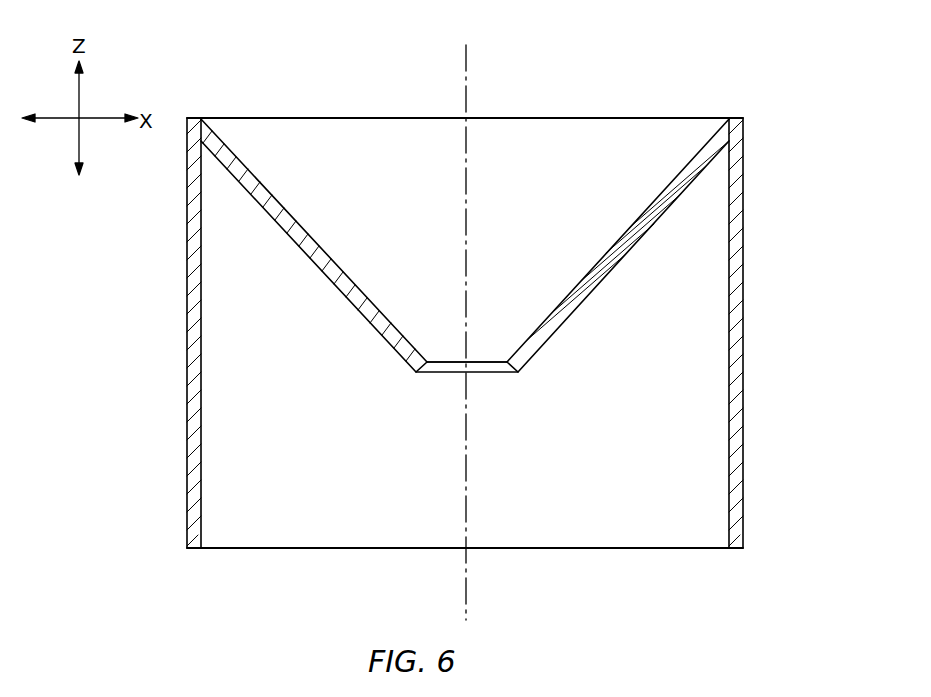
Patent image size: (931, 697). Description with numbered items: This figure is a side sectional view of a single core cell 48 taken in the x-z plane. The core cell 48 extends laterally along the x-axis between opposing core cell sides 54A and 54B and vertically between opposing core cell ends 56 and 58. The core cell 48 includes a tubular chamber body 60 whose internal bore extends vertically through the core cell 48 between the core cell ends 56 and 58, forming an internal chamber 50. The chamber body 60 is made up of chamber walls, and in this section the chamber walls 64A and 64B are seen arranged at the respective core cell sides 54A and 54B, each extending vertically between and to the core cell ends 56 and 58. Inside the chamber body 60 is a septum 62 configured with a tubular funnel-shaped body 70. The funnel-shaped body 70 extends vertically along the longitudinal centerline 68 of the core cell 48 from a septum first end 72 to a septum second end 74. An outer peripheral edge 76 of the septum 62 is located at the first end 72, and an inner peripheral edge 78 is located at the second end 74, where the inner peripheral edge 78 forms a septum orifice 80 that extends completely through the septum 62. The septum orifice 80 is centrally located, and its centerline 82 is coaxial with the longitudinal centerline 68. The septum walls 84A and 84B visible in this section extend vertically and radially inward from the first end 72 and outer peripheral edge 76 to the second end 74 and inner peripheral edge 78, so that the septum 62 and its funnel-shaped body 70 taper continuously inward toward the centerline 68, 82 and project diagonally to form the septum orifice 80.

The core cell 48 is at (459, 326).
The internal chamber 50 is at (543, 150).
The core cell end 56 is at (733, 118).
The core cell end 58 is at (733, 548).
The chamber body 60 is at (788, 333).
The core cell side 54A is at (135, 333).
The chamber wall 64A is at (187, 345).
The core cell side 54B is at (788, 333).
The chamber wall 64B is at (743, 388).
The septum first end 72 is at (309, 202).
The outer peripheral edge 76 is at (198, 118).
The septum wall 84A is at (309, 202).
The septum wall 84B is at (618, 264).
The septum 62 is at (618, 264).
The funnel-shaped body 70 is at (650, 225).
The septum second end 74 is at (426, 409).
The inner peripheral edge 78 is at (426, 409).
The septum orifice 80 is at (442, 373).
The longitudinal centerline 68 is at (529, 343).
The orifice centerline 82 is at (466, 610).